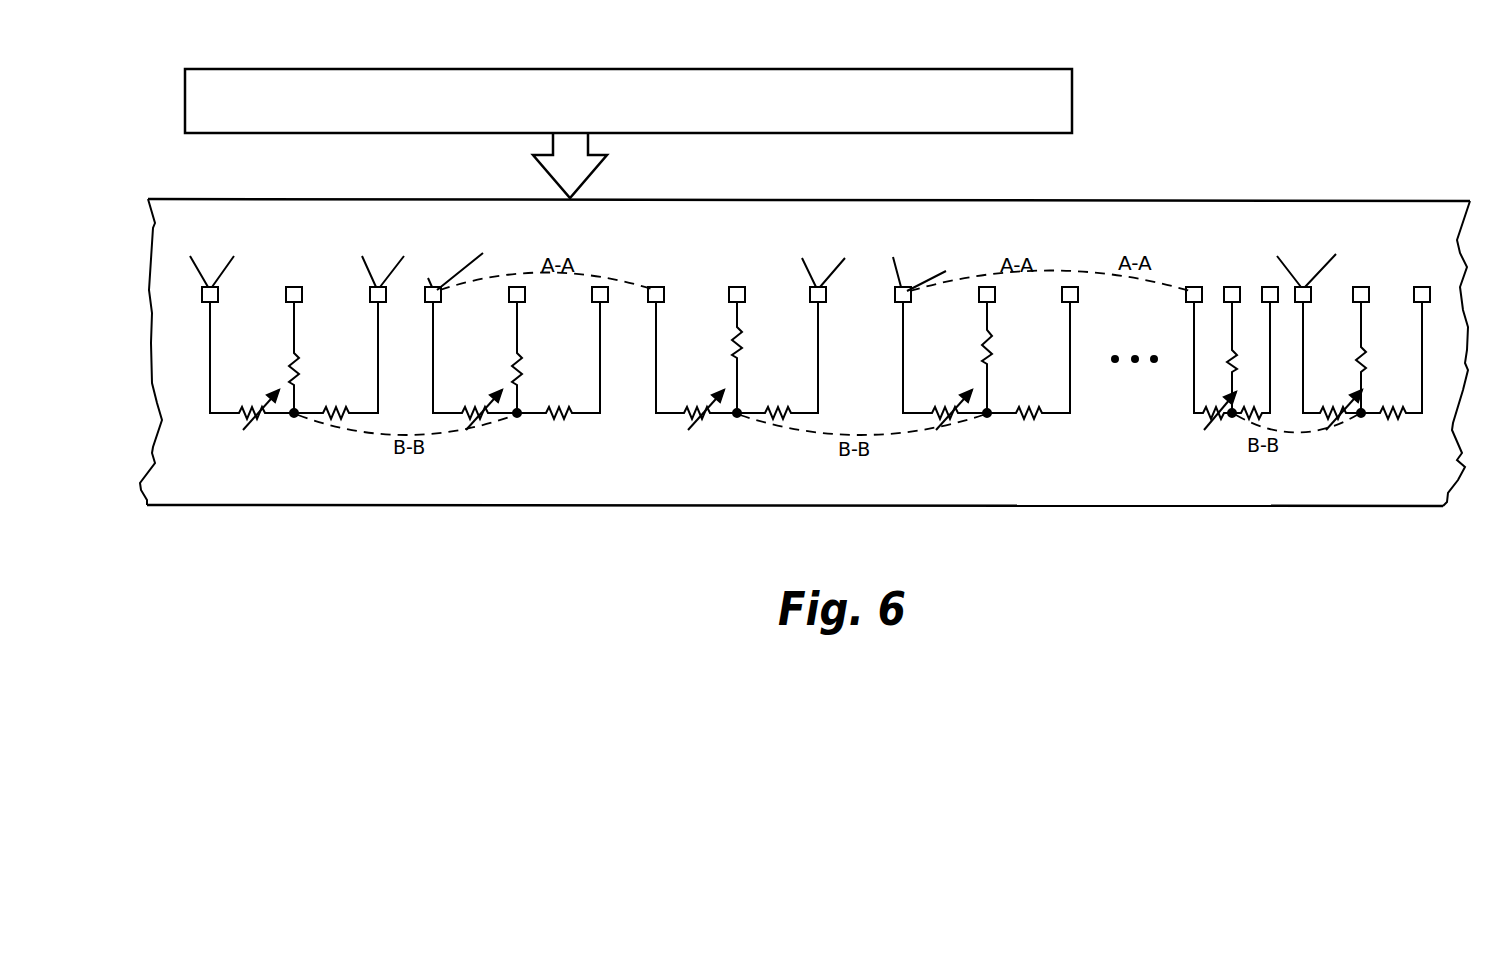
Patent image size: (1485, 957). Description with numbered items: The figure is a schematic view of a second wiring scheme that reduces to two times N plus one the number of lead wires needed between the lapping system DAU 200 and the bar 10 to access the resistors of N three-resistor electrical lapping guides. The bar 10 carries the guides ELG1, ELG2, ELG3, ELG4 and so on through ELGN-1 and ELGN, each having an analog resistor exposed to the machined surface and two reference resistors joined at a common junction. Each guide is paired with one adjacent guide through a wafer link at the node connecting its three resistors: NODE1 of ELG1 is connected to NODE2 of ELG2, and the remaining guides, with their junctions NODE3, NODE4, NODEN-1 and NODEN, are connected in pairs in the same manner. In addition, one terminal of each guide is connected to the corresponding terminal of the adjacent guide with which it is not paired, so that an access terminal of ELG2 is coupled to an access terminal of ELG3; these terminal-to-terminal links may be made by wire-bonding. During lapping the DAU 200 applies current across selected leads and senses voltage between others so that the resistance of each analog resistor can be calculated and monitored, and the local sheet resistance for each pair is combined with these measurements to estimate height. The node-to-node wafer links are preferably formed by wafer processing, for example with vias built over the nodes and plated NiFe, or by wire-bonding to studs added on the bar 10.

The lapping system DAU 200 is at (392, 69).
The bar 10 is at (180, 507).
The element ELG1 is at (298, 364).
The element ELG2 is at (532, 364).
The element ELG3 is at (762, 364).
The element ELG4 is at (1000, 364).
The ELG(N-1) ELGN-1 is at (1226, 392).
The ELG N ELGN is at (1361, 363).
The element NODE1 is at (294, 417).
The element NODE2 is at (517, 417).
The element NODE3 is at (737, 417).
The element NODE4 is at (987, 417).
The NODE(N-1) NODEN-1 is at (1232, 417).
The element NODEN is at (1361, 417).